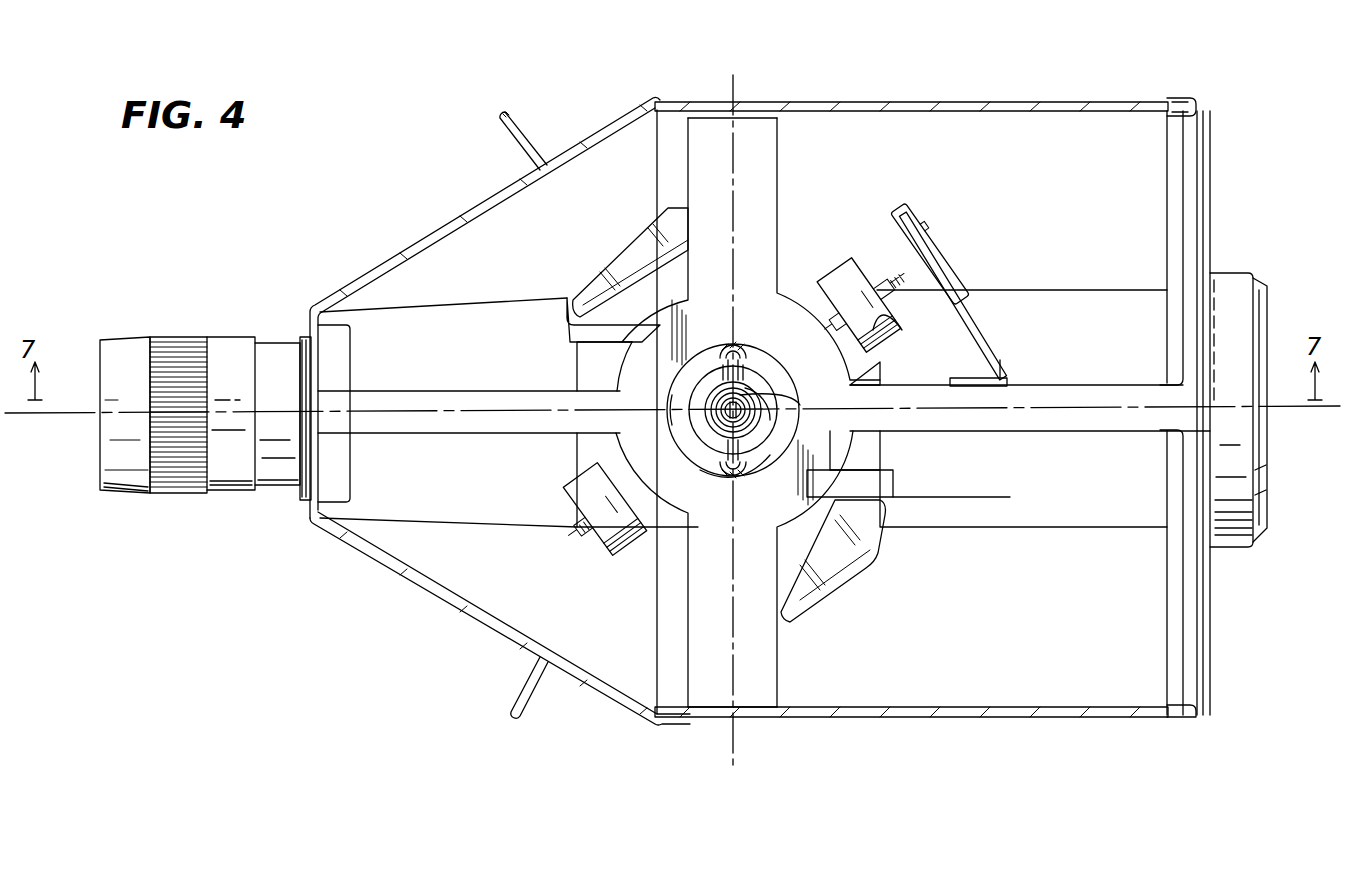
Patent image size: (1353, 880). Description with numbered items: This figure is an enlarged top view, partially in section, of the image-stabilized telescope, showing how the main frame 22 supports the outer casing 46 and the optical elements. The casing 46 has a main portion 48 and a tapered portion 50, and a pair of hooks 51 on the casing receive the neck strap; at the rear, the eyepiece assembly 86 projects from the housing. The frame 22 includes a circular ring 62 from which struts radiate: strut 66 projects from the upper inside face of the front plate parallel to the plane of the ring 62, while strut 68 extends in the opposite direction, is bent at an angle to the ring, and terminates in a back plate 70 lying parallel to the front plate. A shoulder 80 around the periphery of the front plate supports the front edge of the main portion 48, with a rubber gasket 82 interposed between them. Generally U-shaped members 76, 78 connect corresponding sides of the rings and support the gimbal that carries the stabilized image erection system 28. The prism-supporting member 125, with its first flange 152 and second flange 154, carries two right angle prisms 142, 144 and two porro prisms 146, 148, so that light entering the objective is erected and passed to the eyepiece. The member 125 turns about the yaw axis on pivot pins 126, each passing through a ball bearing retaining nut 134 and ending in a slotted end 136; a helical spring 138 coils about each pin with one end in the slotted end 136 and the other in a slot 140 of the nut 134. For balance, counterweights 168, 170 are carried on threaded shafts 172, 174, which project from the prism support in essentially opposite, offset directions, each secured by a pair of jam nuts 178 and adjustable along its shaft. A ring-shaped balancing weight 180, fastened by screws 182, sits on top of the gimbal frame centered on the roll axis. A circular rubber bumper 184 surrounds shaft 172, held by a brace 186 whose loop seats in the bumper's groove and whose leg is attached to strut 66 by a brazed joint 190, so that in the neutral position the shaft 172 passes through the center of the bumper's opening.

The support housing 22 is at (1048, 436).
The stabilized image erection system 28 is at (882, 548).
The outer casing 46 is at (958, 100).
The main portion 48 is at (1078, 100).
The tapered portion 50 is at (445, 232).
The hooks 51 is at (532, 140).
The circular ring 62 is at (780, 315).
The strut 66 is at (1120, 385).
The strut 68 is at (443, 390).
The back plate 70 is at (343, 368).
The U-shaped member 76 is at (760, 178).
The U-shaped member 78 is at (762, 677).
The shoulder 80 is at (1200, 112).
The rubber gasket 82 is at (1182, 98).
The eyepiece assembly 86 is at (183, 328).
The prism-supporting member 125 is at (893, 497).
The pivot pins 126 is at (760, 410).
The ball bearing retaining nut 134 is at (760, 360).
The slotted end 136 is at (762, 418).
The helical spring 138 is at (718, 455).
The slot 140 is at (768, 452).
The right angle prism 142 is at (880, 462).
The right angle prism 144 is at (575, 368).
The porro prism 146 is at (848, 555).
The porro prism 148 is at (612, 245).
The first flange 152 is at (893, 485).
The second flange 154 is at (568, 322).
The counterweight 168 is at (840, 275).
The counterweight 170 is at (620, 548).
The threaded shaft 172 is at (868, 255).
The threaded shaft 174 is at (582, 545).
The jam nuts 178 is at (878, 333).
The balancing weight 180 is at (672, 403).
The screws 182 is at (727, 345).
The circular rubber bumper 184 is at (910, 212).
The brace 186 is at (975, 312).
The brazed joint 190 is at (1012, 378).